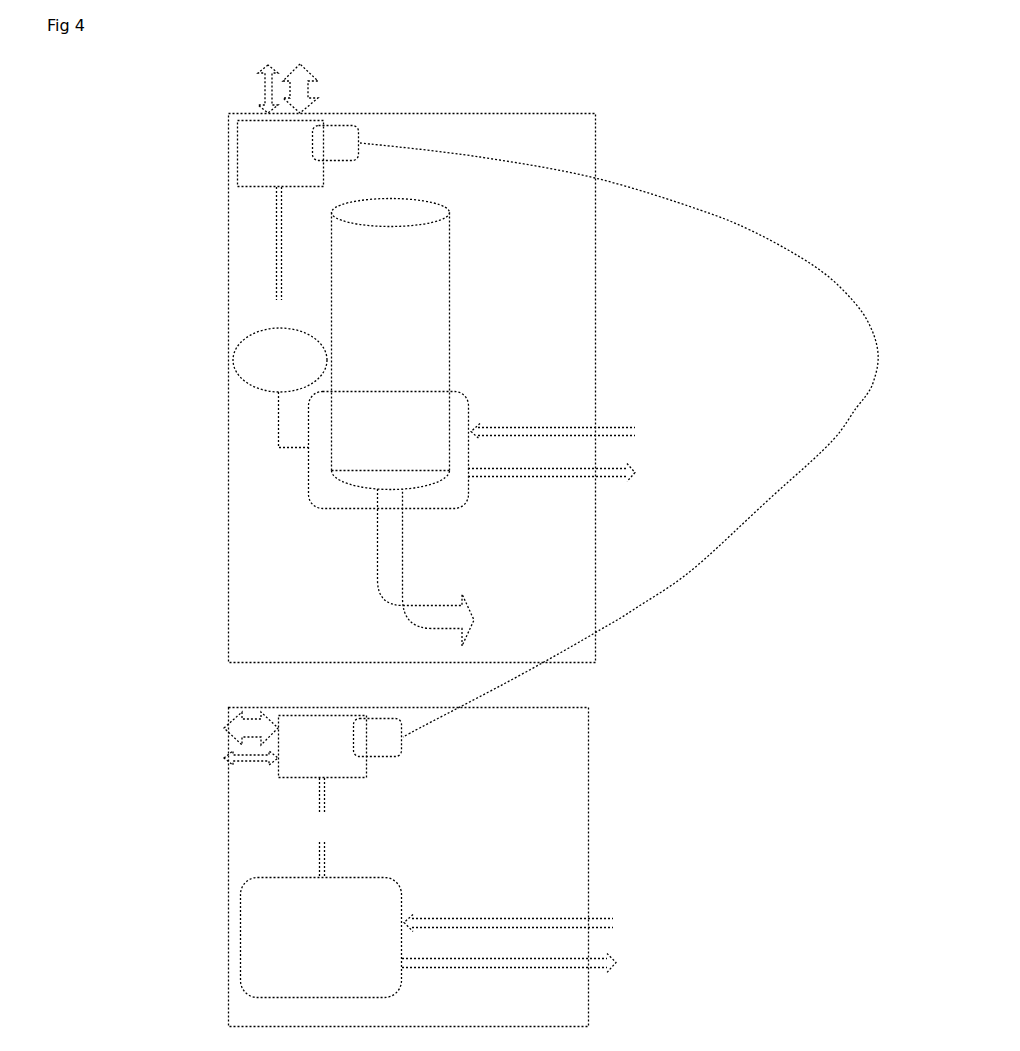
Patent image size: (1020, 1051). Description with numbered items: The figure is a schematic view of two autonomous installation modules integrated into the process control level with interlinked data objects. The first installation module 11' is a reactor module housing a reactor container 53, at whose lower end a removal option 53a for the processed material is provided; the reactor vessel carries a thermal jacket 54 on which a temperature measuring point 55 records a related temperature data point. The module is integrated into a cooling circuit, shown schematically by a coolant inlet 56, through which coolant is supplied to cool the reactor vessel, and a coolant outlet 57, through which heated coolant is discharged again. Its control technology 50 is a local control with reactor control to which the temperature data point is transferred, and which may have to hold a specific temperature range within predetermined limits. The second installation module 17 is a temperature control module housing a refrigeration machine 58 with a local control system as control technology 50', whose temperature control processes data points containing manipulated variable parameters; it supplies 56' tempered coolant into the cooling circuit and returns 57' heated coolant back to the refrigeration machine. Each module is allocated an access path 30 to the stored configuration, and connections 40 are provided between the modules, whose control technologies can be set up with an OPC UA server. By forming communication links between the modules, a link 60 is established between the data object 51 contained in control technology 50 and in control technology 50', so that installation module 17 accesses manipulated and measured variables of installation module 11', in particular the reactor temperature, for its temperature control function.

The installation module 11' is at (412, 388).
The installation module 17 is at (409, 867).
The access path / communication links 30 is at (255, 67).
The connections 40 is at (326, 70).
The control technology 50 is at (281, 225).
The control technology 50' is at (323, 797).
The data object 51 is at (357, 441).
The reactor container 53 is at (391, 344).
The removal option 53a is at (403, 567).
The thermal jacket 54 is at (302, 472).
The temperature measuring point 55 is at (280, 388).
The coolant inlet 56 is at (579, 401).
The coolant outlet 57 is at (564, 495).
The coolant inlet 56' is at (530, 976).
The coolant outlet 57' is at (532, 908).
The refrigeration machine 58 is at (321, 938).
The link 60 is at (736, 205).